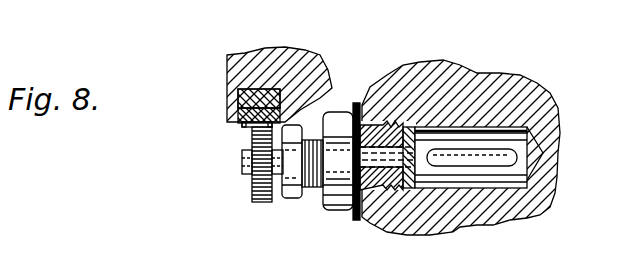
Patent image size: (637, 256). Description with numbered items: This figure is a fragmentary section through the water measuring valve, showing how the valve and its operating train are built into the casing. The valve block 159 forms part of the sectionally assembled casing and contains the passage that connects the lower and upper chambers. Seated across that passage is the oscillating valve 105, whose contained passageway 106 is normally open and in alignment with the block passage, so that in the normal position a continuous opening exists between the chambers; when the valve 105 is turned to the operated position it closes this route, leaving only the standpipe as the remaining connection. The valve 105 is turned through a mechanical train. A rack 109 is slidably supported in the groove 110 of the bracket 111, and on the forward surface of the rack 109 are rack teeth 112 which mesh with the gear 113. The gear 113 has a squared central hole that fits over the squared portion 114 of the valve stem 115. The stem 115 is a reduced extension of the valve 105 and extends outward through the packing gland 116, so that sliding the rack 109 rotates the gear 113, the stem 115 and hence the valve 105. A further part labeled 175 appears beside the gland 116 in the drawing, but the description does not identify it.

The oscillating valve 105 is at (520, 147).
The passageway 106 is at (503, 160).
The rack 109 is at (250, 112).
The groove 110 is at (242, 89).
The bracket 111 is at (237, 72).
The rack teeth 112 is at (248, 126).
The gear 113 is at (267, 187).
The squared portion 114 is at (242, 160).
The valve stem 115 is at (380, 122).
The packing gland 116 is at (297, 188).
The valve block 159 is at (530, 103).
The flange 175 is at (343, 207).